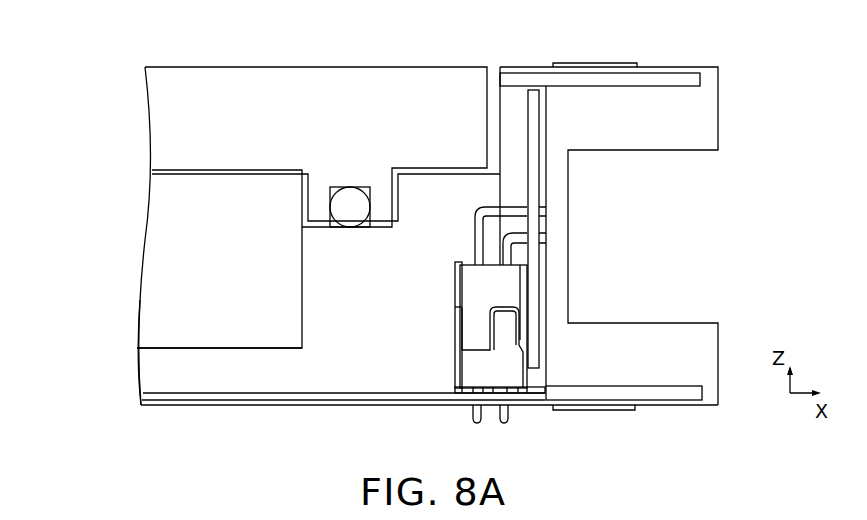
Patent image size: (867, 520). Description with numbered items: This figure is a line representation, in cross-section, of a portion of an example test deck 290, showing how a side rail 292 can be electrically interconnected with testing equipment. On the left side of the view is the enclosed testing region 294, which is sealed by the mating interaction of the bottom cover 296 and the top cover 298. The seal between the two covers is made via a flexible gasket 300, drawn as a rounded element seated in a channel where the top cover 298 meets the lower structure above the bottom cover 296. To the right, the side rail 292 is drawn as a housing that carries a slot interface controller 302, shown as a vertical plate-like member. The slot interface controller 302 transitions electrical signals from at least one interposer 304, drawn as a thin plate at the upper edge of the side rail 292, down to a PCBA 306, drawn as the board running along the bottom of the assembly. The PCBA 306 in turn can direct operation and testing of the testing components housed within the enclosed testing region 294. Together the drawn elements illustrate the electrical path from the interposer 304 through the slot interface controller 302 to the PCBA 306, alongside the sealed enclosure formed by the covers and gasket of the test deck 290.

The test deck 290 is at (122, 52).
The side rail 292 is at (714, 138).
The enclosed testing region 294 is at (193, 210).
The bottom cover 296 is at (160, 367).
The top cover 298 is at (193, 100).
The flexible gasket 300 is at (350, 188).
The slot interface controller 302 is at (558, 262).
The interposer 304 is at (628, 51).
The PCBA 306 is at (255, 403).